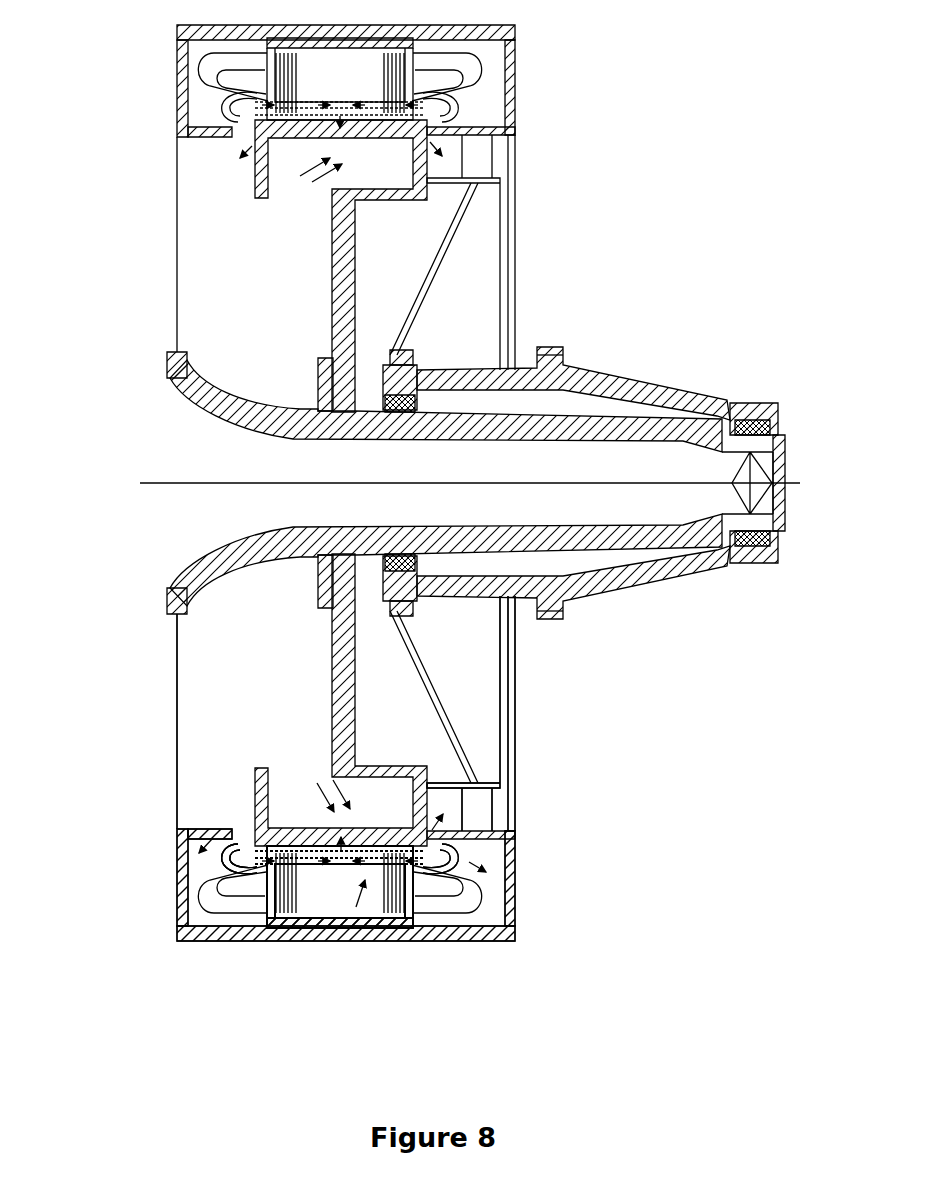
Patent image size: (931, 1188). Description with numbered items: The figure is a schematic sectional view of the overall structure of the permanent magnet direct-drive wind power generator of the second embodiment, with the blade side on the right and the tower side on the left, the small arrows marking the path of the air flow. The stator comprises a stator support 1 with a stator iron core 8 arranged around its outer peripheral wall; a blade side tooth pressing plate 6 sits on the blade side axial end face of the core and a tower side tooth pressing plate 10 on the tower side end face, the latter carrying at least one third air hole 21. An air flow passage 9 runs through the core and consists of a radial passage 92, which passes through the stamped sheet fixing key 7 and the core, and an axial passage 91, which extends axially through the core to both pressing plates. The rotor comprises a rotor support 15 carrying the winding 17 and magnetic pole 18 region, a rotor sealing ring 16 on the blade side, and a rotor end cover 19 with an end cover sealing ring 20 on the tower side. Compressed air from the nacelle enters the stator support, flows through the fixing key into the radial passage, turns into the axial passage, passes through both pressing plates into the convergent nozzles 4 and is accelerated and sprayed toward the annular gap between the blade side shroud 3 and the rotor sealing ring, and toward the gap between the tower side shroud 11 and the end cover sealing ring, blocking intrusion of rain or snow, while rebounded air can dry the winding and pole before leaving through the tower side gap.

The stator support 1 is at (262, 800).
The blade side shroud 3 is at (457, 847).
The convergent nozzle 4 is at (217, 850).
The blade side tooth pressing plate 6 is at (405, 880).
The stamped sheet fixing key 7 is at (418, 870).
The stator iron core 8 is at (262, 908).
The air flow passage 9 is at (362, 935).
The tower side tooth pressing plate 10 is at (262, 880).
The tower side shroud 11 is at (220, 833).
The rotor support 15 is at (357, 905).
The rotor sealing ring 16 is at (445, 835).
The winding 17 is at (470, 888).
The magnetic pole 18 is at (352, 905).
The rotor end cover 19 is at (175, 833).
The end cover sealing ring 20 is at (205, 843).
The third air hole 21 is at (223, 853).
The axial passage 91 is at (380, 865).
The radial passage 92 is at (315, 870).